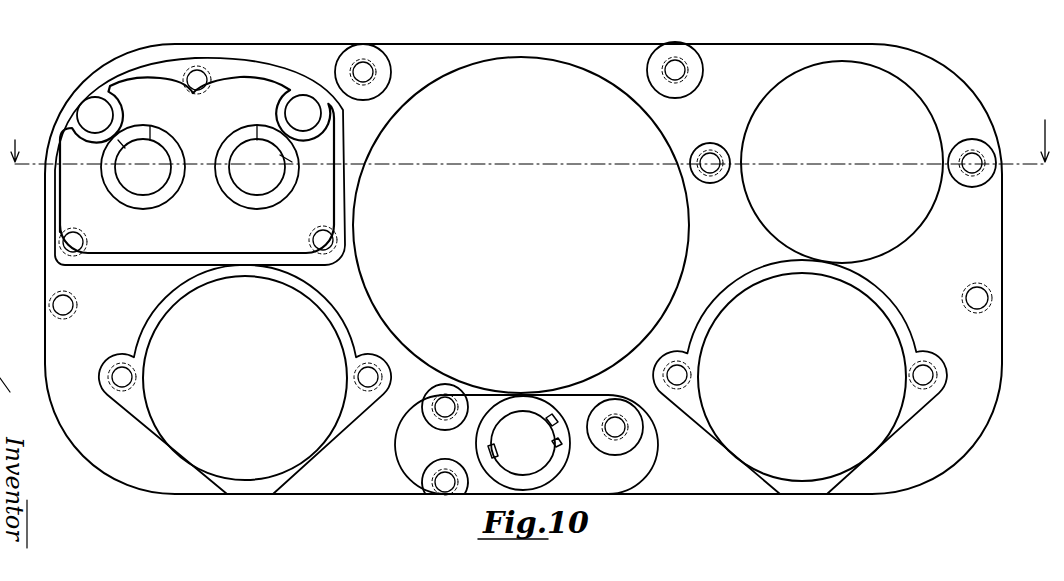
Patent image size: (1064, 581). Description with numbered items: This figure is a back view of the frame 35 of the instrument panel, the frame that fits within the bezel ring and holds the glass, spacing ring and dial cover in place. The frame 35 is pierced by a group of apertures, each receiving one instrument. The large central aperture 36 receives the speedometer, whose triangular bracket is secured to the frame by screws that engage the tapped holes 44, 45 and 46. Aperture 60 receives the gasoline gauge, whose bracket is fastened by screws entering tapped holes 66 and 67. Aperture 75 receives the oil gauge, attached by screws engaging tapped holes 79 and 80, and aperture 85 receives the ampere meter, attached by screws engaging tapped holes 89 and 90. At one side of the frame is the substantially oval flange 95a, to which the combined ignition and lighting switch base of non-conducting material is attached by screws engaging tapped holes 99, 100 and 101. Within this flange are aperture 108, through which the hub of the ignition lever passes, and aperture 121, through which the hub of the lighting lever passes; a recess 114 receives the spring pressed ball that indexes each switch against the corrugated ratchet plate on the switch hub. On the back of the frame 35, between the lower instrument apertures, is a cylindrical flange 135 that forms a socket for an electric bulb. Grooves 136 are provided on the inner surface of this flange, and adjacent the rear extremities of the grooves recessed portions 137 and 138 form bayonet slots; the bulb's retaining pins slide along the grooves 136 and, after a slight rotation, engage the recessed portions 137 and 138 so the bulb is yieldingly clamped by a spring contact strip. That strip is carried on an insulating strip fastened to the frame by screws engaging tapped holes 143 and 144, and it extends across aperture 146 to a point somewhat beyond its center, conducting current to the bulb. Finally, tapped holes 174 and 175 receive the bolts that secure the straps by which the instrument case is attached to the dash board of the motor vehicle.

The frame 35 is at (1002, 223).
The aperture 36 is at (584, 88).
The tapped hole 44 is at (362, 70).
The tapped hole 45 is at (678, 68).
The tapped hole 46 is at (618, 428).
The aperture 60 is at (917, 120).
The tapped hole 66 is at (977, 159).
The tapped hole 67 is at (711, 161).
The aperture 75 is at (877, 425).
The tapped hole 79 is at (674, 364).
The tapped hole 80 is at (930, 373).
The aperture 85 is at (180, 420).
The tapped hole 89 is at (118, 378).
The tapped hole 90 is at (371, 377).
The substantially oval flange 95a is at (130, 67).
The tapped hole 99 is at (68, 247).
The tapped hole 100 is at (326, 251).
The tapped hole 101 is at (199, 71).
The aperture 108 is at (152, 182).
The recess 114 is at (92, 118).
The aperture 121 is at (257, 182).
The cylindrical flange 135 is at (567, 463).
The grooves 136 is at (556, 443).
The recessed portion 137 is at (492, 453).
The recessed portion 138 is at (556, 430).
The tapped hole 143 is at (436, 482).
The tapped hole 144 is at (436, 408).
The aperture 146 is at (537, 462).
The tapped hole 174 is at (981, 296).
The tapped hole 175 is at (53, 306).